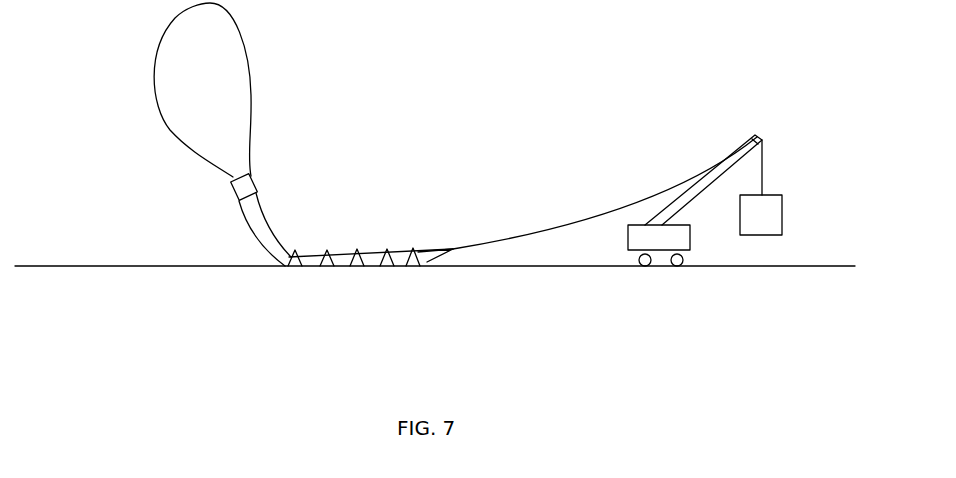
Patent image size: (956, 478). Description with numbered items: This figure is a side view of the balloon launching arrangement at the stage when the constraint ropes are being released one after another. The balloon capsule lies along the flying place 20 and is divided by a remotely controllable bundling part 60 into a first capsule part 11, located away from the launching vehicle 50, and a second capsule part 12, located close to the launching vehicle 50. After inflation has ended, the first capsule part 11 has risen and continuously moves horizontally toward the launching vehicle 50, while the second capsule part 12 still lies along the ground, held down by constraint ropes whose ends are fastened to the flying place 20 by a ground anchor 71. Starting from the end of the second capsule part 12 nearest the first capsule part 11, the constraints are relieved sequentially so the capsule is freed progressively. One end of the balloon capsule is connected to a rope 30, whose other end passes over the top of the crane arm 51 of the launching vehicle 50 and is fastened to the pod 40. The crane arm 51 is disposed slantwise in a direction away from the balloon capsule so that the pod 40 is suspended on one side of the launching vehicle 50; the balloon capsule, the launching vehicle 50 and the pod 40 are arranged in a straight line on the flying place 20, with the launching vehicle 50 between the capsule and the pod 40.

The first capsule part 11 is at (180, 109).
The second capsule part 12 is at (305, 262).
The flying place 20 is at (790, 266).
The rope 30 is at (592, 220).
The pod 40 is at (765, 218).
The launching vehicle 50 is at (655, 238).
The crane arm 51 is at (708, 178).
The bundling part 60 is at (253, 170).
The ground anchor 71 is at (353, 268).